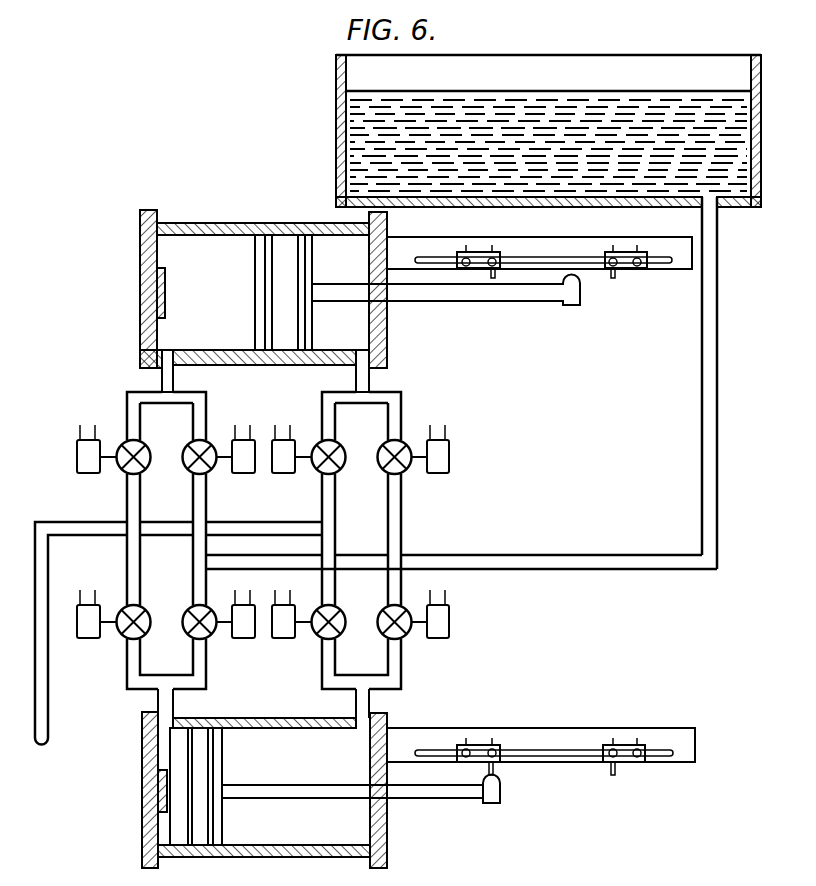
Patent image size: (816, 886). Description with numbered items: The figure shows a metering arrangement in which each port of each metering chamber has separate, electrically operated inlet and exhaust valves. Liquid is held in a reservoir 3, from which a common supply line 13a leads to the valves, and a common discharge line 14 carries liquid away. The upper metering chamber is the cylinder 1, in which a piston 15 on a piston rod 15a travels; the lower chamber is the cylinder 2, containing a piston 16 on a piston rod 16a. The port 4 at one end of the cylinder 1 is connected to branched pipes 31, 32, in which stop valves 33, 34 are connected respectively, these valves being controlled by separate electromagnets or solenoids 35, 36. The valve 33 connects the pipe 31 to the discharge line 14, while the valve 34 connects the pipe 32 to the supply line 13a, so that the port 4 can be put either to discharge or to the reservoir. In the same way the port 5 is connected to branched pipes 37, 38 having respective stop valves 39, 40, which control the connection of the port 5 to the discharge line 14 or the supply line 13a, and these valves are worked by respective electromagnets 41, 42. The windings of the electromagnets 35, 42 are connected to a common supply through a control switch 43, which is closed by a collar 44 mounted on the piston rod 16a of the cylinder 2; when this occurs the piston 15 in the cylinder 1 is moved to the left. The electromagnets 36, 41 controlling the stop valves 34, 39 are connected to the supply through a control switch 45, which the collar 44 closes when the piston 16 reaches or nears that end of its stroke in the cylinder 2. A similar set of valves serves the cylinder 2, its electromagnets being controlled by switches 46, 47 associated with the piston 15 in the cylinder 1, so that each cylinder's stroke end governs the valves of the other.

The cylinder 1 is at (230, 223).
The cylinder 2 is at (285, 853).
The reservoir 3 is at (448, 63).
The port 4 is at (168, 348).
The port 5 is at (357, 349).
The common supply line 13a is at (500, 563).
The common discharge line 14 is at (88, 528).
The piston 15 is at (260, 285).
The piston rod 15a is at (513, 295).
The piston 16 is at (218, 826).
The piston rod 16a is at (410, 792).
The branched pipe 31 is at (130, 427).
The branched pipe 32 is at (198, 418).
The stop valve 33 is at (130, 465).
The stop valve 34 is at (188, 461).
The electromagnet 35 is at (77, 463).
The electromagnet 36 is at (243, 473).
The branched pipe 37 is at (327, 410).
The branched pipe 38 is at (396, 415).
The stop valve 39 is at (340, 461).
The stop valve 40 is at (410, 463).
The electromagnet 41 is at (282, 467).
The electromagnet 42 is at (449, 460).
The control switch 43 is at (480, 746).
The collar 44 is at (494, 798).
The control switch 45 is at (625, 758).
The switch 46 is at (480, 267).
The switch 47 is at (623, 267).